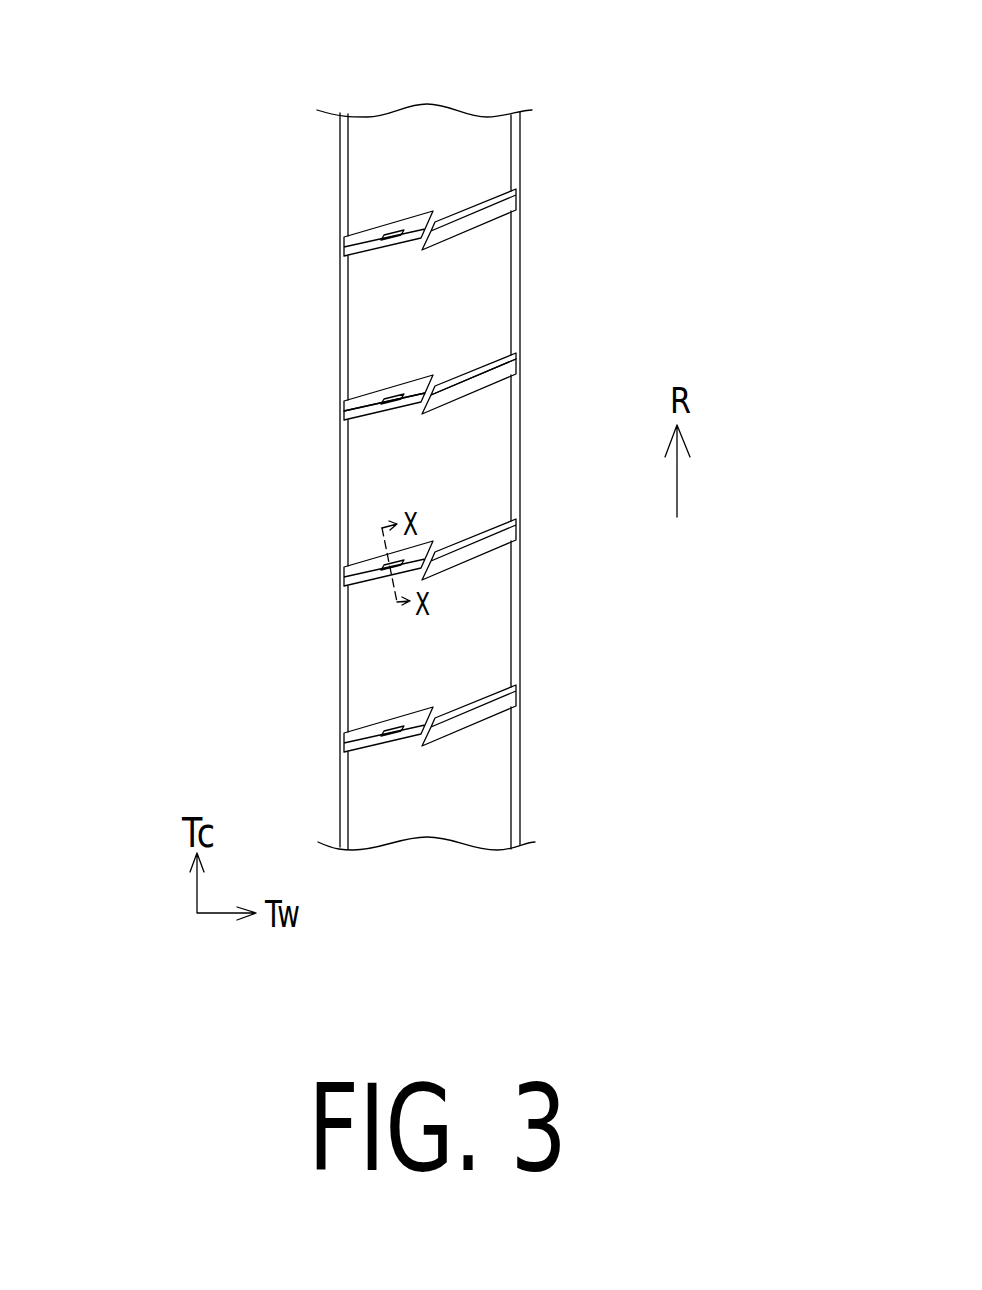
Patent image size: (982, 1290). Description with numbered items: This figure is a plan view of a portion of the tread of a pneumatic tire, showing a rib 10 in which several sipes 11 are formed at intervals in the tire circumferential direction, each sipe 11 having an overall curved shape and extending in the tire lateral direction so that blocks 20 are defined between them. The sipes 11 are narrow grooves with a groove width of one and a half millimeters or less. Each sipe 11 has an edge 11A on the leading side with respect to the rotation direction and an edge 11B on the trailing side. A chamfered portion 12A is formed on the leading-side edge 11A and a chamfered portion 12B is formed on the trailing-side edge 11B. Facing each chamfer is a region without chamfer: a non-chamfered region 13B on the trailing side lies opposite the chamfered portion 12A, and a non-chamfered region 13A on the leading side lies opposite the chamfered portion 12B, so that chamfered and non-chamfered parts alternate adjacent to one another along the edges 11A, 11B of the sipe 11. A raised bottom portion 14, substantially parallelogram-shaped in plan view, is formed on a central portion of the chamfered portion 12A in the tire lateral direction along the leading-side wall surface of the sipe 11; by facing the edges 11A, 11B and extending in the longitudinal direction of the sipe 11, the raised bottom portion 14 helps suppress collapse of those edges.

The rib 10 is at (527, 77).
The block 20 is at (390, 643).
The sipe 11 is at (368, 408).
The edge on the leading side 11A is at (398, 390).
The edge on the trailing side 11B is at (450, 387).
The chamfered portion on the leading side 12A is at (393, 384).
The chamfered portion on the trailing side 12B is at (471, 388).
The non-chamfered region on the leading side 13A is at (470, 368).
The non-chamfered region on the trailing side 13B is at (393, 412).
The raised bottom portion 14 is at (382, 398).